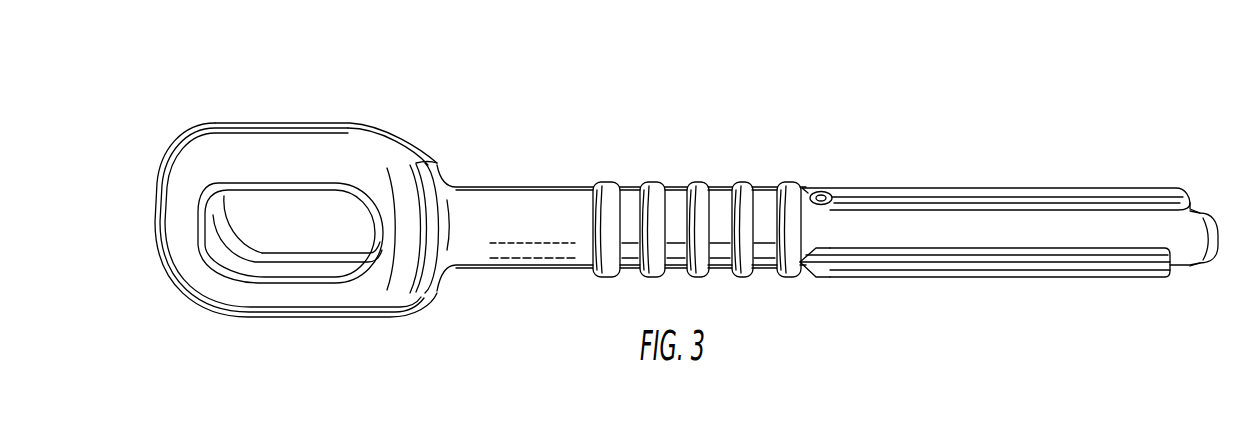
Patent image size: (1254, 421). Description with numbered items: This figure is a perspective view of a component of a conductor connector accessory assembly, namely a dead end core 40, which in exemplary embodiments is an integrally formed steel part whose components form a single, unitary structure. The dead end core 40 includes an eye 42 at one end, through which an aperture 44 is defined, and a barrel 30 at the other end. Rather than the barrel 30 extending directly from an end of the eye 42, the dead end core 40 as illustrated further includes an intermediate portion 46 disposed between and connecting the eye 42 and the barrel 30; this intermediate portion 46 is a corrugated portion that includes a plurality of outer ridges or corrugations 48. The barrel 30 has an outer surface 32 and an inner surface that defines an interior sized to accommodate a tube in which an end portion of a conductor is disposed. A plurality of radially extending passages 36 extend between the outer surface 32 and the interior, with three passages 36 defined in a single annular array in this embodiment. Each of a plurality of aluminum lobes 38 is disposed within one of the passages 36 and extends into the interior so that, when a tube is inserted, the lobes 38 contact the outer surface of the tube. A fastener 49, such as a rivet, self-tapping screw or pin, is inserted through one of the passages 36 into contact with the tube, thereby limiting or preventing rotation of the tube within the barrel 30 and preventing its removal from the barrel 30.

The barrel 30 is at (1020, 200).
The outer surface 32 is at (912, 212).
The radially extending passages 36 is at (1092, 200).
The lobes 38 is at (983, 275).
The dead end core 40 is at (538, 135).
The eye 42 is at (333, 150).
The aperture 44 is at (335, 262).
The intermediate portion 46 is at (586, 190).
The corrugations 48 is at (652, 183).
The fastener 49 is at (826, 190).